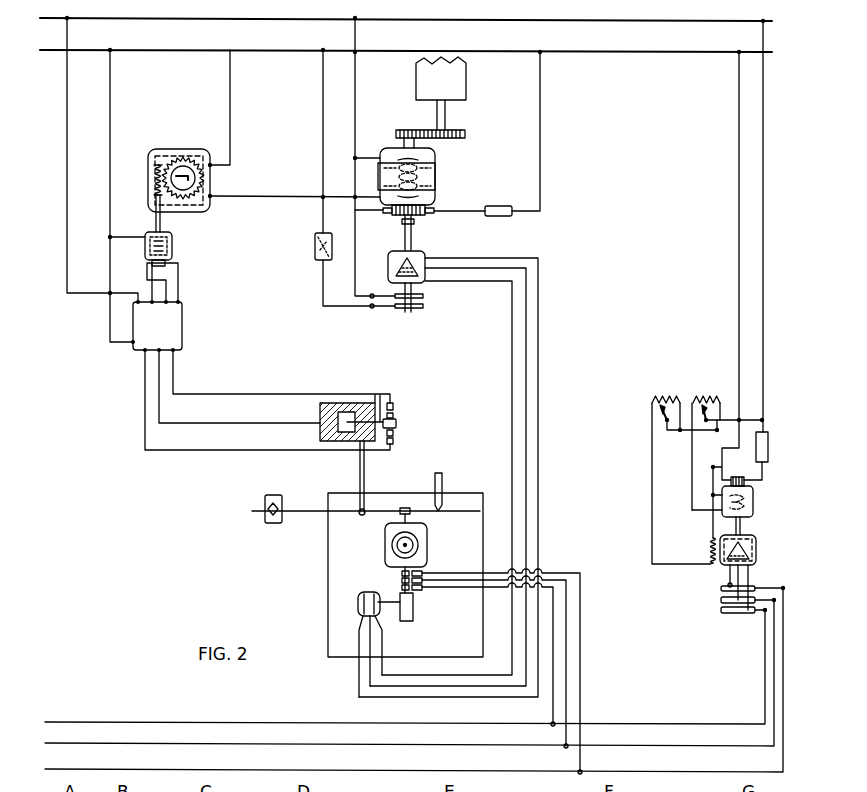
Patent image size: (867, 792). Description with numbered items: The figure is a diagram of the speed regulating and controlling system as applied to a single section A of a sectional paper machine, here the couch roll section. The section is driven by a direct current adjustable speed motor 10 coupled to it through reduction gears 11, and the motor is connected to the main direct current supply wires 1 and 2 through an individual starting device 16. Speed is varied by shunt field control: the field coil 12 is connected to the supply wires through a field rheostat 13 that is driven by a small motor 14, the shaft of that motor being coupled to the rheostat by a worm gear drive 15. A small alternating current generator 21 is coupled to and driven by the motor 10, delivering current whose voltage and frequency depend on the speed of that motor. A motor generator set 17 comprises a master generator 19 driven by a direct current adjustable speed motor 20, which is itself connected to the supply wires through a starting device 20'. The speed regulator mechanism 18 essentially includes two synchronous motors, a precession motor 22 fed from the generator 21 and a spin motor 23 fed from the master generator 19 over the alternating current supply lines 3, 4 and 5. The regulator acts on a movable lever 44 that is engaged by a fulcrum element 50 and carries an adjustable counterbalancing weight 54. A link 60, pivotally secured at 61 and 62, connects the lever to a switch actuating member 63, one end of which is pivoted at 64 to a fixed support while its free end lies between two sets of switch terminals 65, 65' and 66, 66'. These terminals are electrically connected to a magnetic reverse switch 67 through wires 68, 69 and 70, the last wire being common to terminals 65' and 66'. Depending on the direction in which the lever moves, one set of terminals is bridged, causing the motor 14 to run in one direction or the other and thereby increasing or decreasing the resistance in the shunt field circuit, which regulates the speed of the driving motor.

The main direct current supply wire 1 is at (656, 20).
The main direct current supply wire 2 is at (660, 53).
The alternating current supply line 3 is at (656, 722).
The alternating current supply line 4 is at (656, 743).
The alternating current supply line 5 is at (656, 769).
The section A is at (468, 80).
The direct current adjustable speed motor 10 is at (430, 160).
The reduction gears 11 is at (432, 130).
The field coil 12 is at (420, 181).
The field rheostat 13 is at (205, 185).
The small motor 14 is at (173, 244).
The worm gear drive 15 is at (154, 177).
The starting device 16 is at (498, 218).
The motor generator set 17 is at (744, 540).
The speed regulator mechanism 18 is at (328, 556).
The generator 19 is at (758, 553).
The direct current adjustable speed motor 20 is at (763, 497).
The starting device 20' is at (779, 447).
The alternating current generator 21 is at (418, 256).
The precession motor 22 is at (368, 594).
The spin motor 23 is at (428, 538).
The lever 44 is at (311, 504).
The fulcrum element 50 is at (443, 490).
The counterbalancing weight 54 is at (262, 505).
The link 60 is at (366, 487).
The pivot 61 is at (373, 396).
The pivot 62 is at (359, 515).
The switch actuating member 63 is at (384, 400).
The pivot 64 is at (348, 428).
The switch terminal 65 is at (413, 397).
The switch terminal 65' is at (431, 410).
The switch terminal 66 is at (409, 449).
The switch terminal 66' is at (431, 432).
The magnetic reverse switch 67 is at (168, 322).
The wire 68 is at (210, 396).
The wire 69 is at (217, 454).
The wire 70 is at (222, 427).